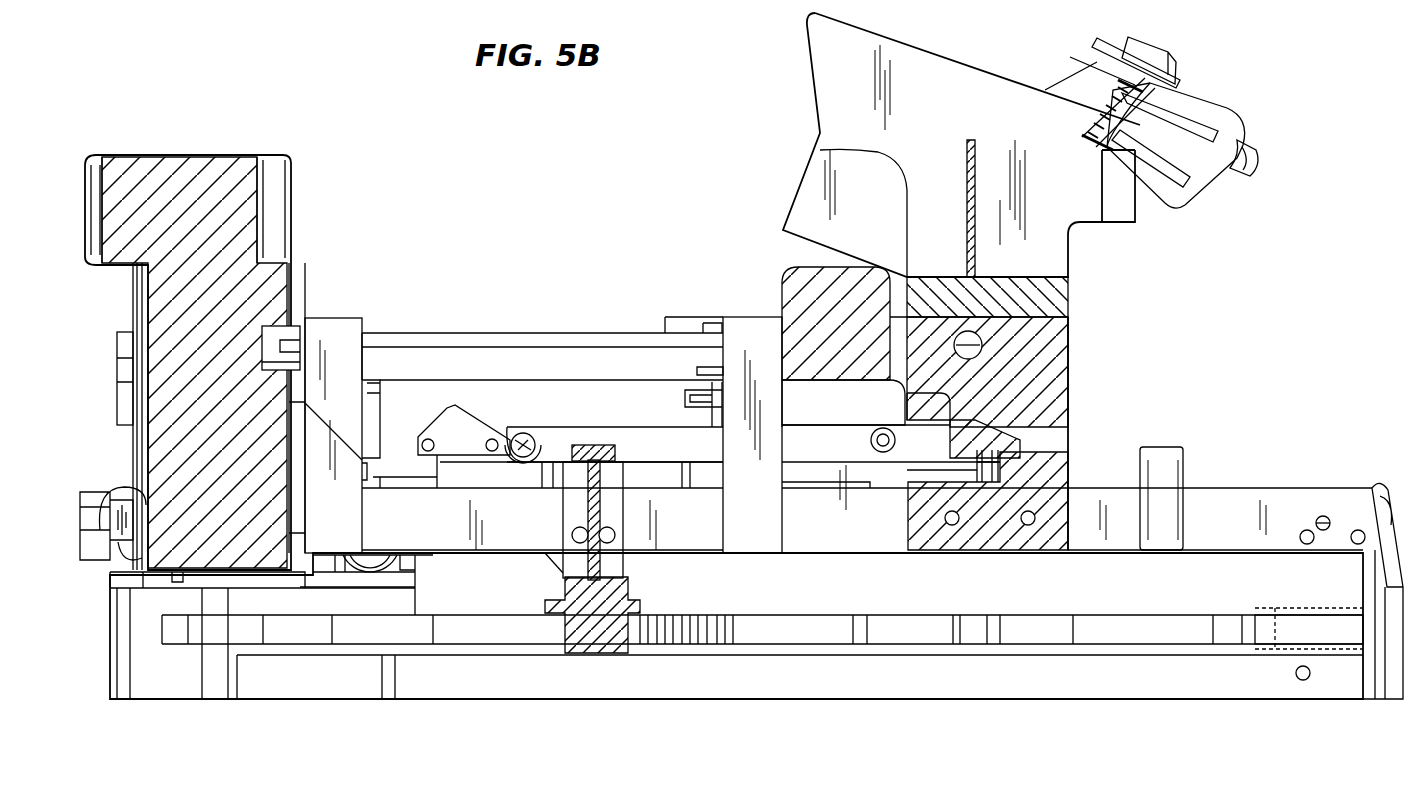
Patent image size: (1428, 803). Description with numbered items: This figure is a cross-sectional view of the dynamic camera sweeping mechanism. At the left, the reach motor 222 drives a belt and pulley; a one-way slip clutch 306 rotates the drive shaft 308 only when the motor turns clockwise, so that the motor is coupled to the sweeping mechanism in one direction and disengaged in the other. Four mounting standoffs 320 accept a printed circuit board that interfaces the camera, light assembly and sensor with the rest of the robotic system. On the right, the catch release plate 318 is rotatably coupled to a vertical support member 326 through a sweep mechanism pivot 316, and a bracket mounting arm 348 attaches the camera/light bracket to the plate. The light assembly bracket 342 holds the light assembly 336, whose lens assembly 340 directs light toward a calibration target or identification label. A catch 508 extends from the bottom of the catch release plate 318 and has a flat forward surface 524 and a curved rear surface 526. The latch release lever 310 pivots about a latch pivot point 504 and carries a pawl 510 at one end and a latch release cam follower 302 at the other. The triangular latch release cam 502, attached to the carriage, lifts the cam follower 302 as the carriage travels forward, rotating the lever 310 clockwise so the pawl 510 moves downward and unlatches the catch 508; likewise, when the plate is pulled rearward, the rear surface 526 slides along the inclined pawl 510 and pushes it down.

The reach motor 222 is at (190, 155).
The latch release cam follower 302 is at (524, 432).
The one-way slip clutch 306 is at (594, 655).
The drive shaft 308 is at (560, 655).
The latch release lever 310 is at (595, 427).
The sweep mechanism pivot 316 is at (985, 345).
The catch release plate 318 is at (1068, 362).
The mounting standoff 320 is at (333, 318).
The vertical support member 326 is at (1068, 470).
The light assembly 336 is at (1180, 77).
The lens assembly 340 is at (1257, 162).
The light assembly bracket 342 is at (1050, 92).
The bracket mounting arm 348 is at (1068, 302).
The latch release cam 502 is at (458, 405).
The latch pivot point 504 is at (883, 462).
The catch 508 is at (965, 402).
The pawl 510 is at (993, 482).
The forward surface 524 is at (990, 412).
The rear surface 526 is at (905, 415).